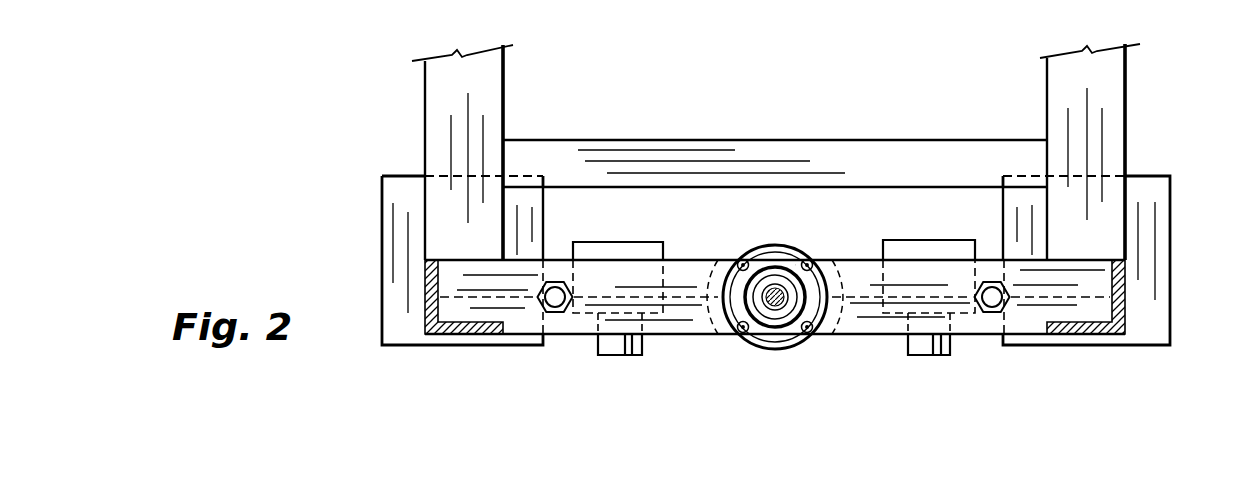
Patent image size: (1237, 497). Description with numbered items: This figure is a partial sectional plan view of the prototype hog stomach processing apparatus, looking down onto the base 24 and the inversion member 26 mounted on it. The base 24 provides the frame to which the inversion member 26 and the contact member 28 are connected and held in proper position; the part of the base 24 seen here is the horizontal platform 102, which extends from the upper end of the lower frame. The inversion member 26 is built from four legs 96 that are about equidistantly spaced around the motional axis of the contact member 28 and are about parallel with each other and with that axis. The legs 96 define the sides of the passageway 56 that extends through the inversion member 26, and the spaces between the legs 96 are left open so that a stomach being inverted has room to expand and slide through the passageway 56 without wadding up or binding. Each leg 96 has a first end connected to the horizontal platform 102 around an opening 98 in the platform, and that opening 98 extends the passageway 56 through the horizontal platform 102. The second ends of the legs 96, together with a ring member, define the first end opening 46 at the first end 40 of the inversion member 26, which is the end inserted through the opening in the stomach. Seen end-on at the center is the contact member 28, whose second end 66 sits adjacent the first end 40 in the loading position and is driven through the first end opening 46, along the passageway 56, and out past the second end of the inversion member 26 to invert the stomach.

The base 24 is at (1092, 137).
The inversion member 26 is at (768, 250).
The first end 40 is at (775, 224).
The contact member 28 is at (774, 294).
The first end opening 46 is at (798, 282).
The passageway 56 is at (769, 350).
The second end 66 is at (788, 338).
The legs 96 is at (738, 257).
The opening 98 is at (705, 272).
The horizontal platform 102 is at (978, 322).